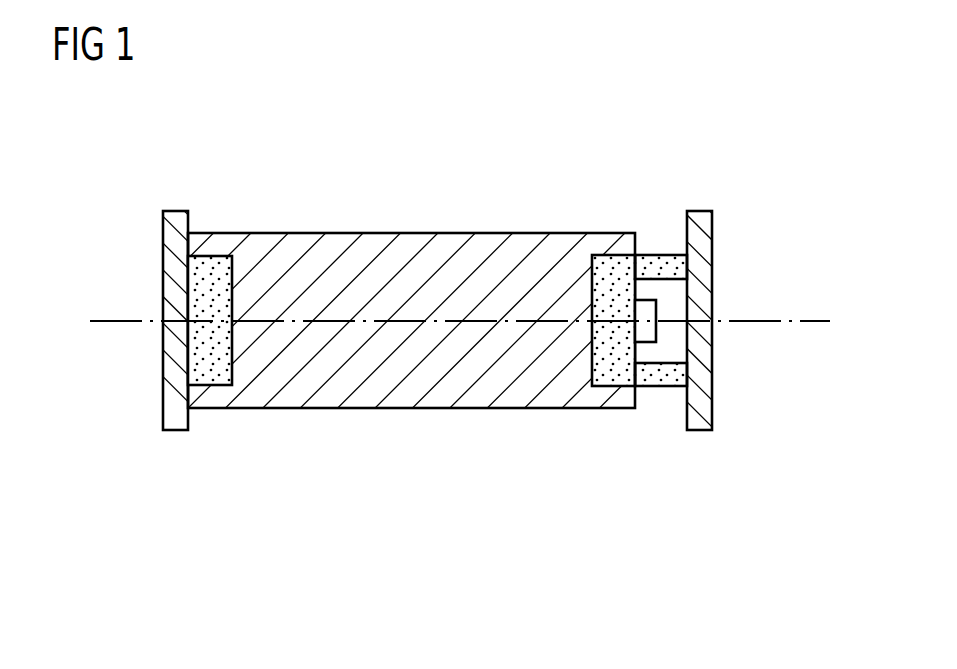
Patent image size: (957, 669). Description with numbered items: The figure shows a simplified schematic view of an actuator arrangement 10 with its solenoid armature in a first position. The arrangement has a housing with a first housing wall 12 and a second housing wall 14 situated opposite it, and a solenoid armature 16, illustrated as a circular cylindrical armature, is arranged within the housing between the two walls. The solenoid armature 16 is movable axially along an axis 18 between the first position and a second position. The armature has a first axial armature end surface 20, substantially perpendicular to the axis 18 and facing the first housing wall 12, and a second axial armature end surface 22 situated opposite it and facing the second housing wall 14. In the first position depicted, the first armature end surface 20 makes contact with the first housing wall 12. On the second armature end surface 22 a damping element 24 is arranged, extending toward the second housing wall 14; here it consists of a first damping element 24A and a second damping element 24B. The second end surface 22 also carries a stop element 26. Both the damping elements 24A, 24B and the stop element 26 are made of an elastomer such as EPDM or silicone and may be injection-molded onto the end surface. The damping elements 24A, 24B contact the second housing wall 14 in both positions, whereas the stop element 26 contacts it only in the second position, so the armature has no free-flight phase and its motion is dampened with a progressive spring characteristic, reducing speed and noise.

The actuator arrangement 10 is at (565, 152).
The first housing wall 12 is at (175, 245).
The second housing wall 14 is at (700, 241).
The solenoid armature 16 is at (380, 390).
The axis 18 is at (822, 318).
The first axial armature end surface 20 is at (168, 384).
The second axial armature end surface 22 is at (653, 388).
The damping element 24 is at (689, 332).
The first damping element 24A is at (660, 262).
The second damping element 24B is at (670, 378).
The stop element 26 is at (647, 330).